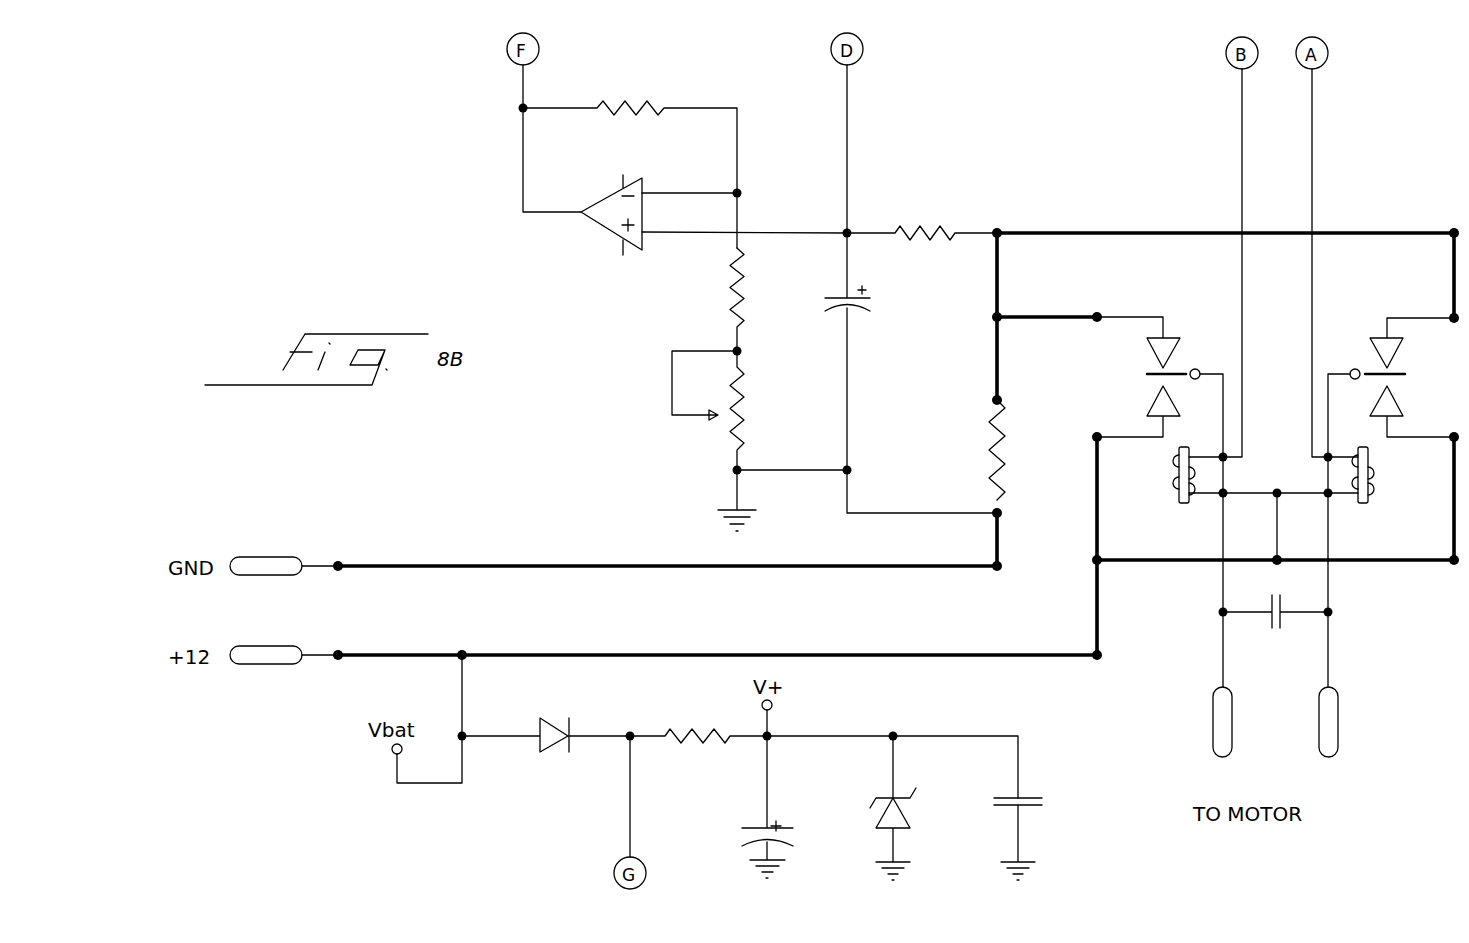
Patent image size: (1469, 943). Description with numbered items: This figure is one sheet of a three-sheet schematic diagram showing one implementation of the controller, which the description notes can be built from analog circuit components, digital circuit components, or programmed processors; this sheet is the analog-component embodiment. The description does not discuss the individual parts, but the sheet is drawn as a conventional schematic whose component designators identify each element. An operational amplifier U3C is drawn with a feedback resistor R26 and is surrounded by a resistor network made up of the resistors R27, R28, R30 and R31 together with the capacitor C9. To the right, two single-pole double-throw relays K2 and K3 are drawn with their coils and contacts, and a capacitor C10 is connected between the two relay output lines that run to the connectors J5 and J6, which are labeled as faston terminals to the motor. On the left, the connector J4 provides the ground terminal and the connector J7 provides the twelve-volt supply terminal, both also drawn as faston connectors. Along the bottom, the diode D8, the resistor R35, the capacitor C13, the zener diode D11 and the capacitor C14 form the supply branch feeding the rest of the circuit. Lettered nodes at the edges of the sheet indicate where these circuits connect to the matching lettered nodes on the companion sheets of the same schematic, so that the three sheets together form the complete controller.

The operational amplifier LM324 U3C is at (689, 211).
The feedback resistor (see table) R26 is at (632, 161).
The resistor 10K R27 is at (922, 236).
The resistor 1K R28 is at (764, 301).
The potentiometer 5K R30 is at (734, 413).
The resistor (see table) R31 is at (950, 450).
The resistor 100 ohm 1/2 W R35 is at (701, 753).
The capacitor 10UF 16V C9 is at (911, 371).
The capacitor .22UF 250V C10 is at (1313, 625).
The capacitor 1000UF 16V C13 is at (795, 807).
The capacitor .22UF C14 is at (1046, 839).
The diode 1N4004 D8 is at (548, 737).
The zener diode 1N5352B D11 is at (932, 808).
The relay SPDT (open) K2 is at (1208, 469).
The relay SPDT (close) K3 is at (1386, 469).
The GND faston connector J4 is at (277, 568).
The faston connector to motor J5 is at (1204, 740).
The faston connector to motor J6 is at (1334, 740).
The +12 faston connector J7 is at (276, 657).